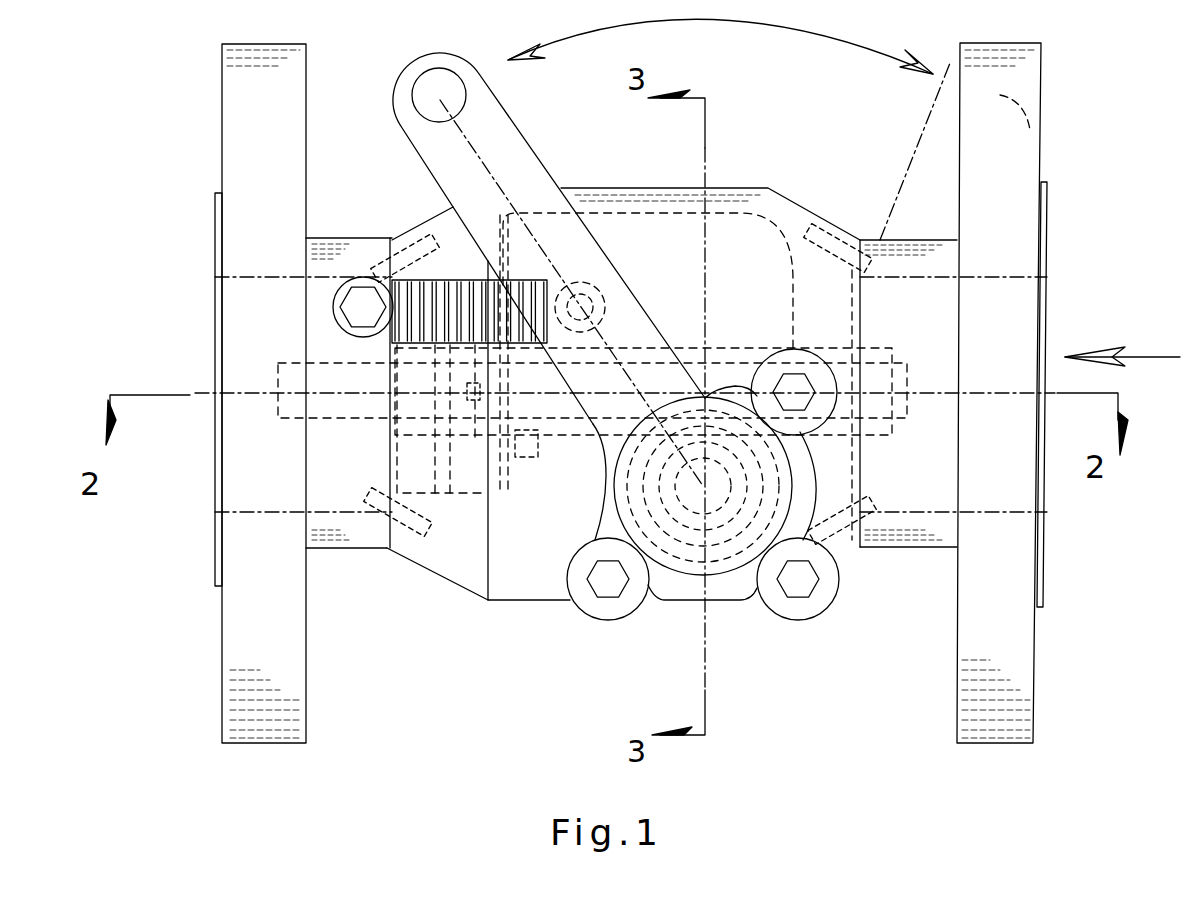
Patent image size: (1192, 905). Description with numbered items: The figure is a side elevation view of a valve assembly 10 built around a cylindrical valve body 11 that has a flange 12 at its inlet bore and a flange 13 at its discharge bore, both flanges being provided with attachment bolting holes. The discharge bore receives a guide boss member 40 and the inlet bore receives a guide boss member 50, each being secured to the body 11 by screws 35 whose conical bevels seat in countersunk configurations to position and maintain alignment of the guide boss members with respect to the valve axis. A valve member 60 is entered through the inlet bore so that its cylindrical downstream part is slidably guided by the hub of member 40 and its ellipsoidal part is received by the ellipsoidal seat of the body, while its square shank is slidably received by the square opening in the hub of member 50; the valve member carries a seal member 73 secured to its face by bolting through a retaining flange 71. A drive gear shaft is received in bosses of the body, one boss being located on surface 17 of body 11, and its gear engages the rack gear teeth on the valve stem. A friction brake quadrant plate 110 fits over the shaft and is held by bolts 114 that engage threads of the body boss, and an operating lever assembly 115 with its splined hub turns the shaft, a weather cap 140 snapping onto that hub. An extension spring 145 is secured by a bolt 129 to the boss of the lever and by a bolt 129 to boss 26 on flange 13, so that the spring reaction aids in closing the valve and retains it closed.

The valve assembly 10 is at (492, 652).
The cylindrical valve body 11 is at (656, 186).
The flange 12 is at (1028, 112).
The flange 13 is at (232, 90).
The surface 17 is at (556, 577).
The boss 26 is at (327, 278).
The screws 35 is at (835, 236).
The guide boss member 40 is at (403, 460).
The guide boss member 50 is at (855, 335).
The valve member 60 is at (467, 473).
The retaining flange 71 is at (517, 470).
The seal member 73 is at (495, 507).
The friction brake quadrant plate 110 is at (680, 585).
The bolts 114 is at (765, 368).
The operating lever assembly 115 is at (628, 300).
The bolt 129 is at (358, 293).
The weather cap 140 is at (735, 562).
The extension spring 145 is at (445, 272).